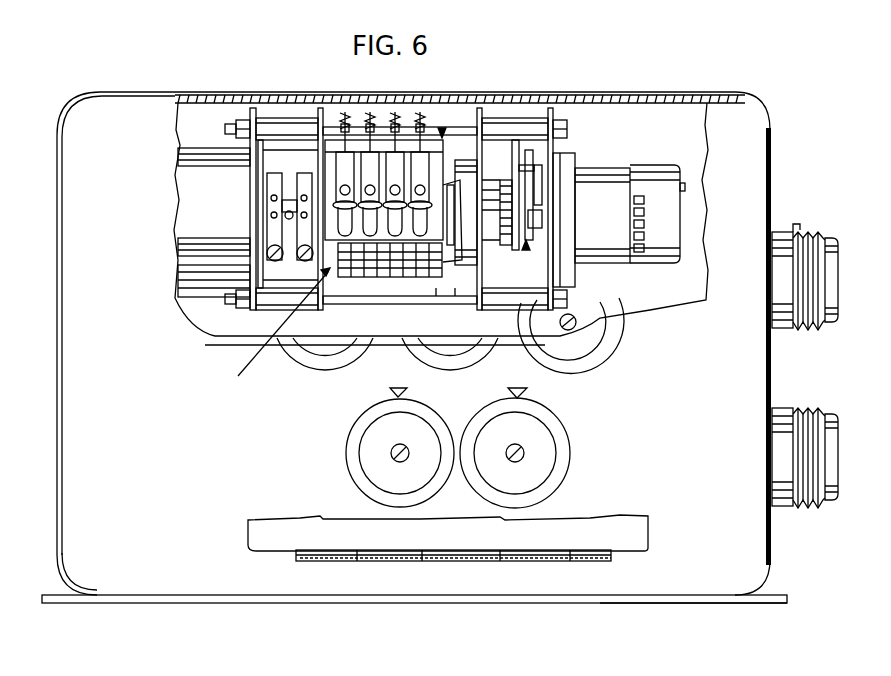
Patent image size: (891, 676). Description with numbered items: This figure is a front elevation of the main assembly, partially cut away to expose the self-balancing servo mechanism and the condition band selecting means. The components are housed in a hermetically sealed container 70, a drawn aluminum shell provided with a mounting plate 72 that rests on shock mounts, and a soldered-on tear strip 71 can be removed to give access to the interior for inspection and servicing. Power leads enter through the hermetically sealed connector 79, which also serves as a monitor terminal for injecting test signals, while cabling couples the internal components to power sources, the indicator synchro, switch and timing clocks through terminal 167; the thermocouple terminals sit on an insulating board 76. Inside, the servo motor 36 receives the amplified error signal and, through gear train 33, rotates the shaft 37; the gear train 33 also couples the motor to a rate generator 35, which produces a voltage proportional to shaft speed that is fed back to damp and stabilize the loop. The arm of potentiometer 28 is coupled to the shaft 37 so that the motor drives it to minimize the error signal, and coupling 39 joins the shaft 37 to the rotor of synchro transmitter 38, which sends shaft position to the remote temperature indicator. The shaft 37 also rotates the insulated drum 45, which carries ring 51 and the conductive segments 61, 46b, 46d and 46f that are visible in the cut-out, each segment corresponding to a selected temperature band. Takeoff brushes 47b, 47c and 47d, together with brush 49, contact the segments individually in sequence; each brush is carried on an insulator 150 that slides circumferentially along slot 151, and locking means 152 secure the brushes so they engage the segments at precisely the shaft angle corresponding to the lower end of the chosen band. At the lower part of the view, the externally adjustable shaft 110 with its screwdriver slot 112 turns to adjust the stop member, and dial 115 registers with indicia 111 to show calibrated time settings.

The potentiometer 28 is at (474, 236).
The gear train 33 is at (526, 248).
The rate generator 35 is at (602, 192).
The servo motor 36 is at (652, 192).
The shaft 37 is at (283, 204).
The synchro transmitter 38 is at (182, 210).
The coupling 39 is at (290, 178).
The drum 45 is at (271, 330).
The segment 46b is at (415, 288).
The segment 46d is at (375, 284).
The segment 46f is at (352, 284).
The takeoff brush 47b is at (392, 140).
The takeoff brush 47c is at (343, 140).
The takeoff brush 47d is at (370, 140).
The brush 49 is at (440, 135).
The ring 51 is at (455, 288).
The segment 61 is at (436, 288).
The hermetically sealed container 70 is at (655, 596).
The tear strip 71 is at (772, 568).
The mounting plate 72 is at (705, 600).
The insulating board 76 is at (797, 226).
The connector 79 is at (834, 263).
The shaft 110 is at (591, 340).
The indicia 111 is at (412, 394).
The slot 112 is at (575, 322).
The dial 115 is at (590, 361).
The insulator 150 is at (342, 183).
The slot 151 is at (416, 214).
The locking means 152 is at (340, 262).
The terminal 167 is at (826, 410).